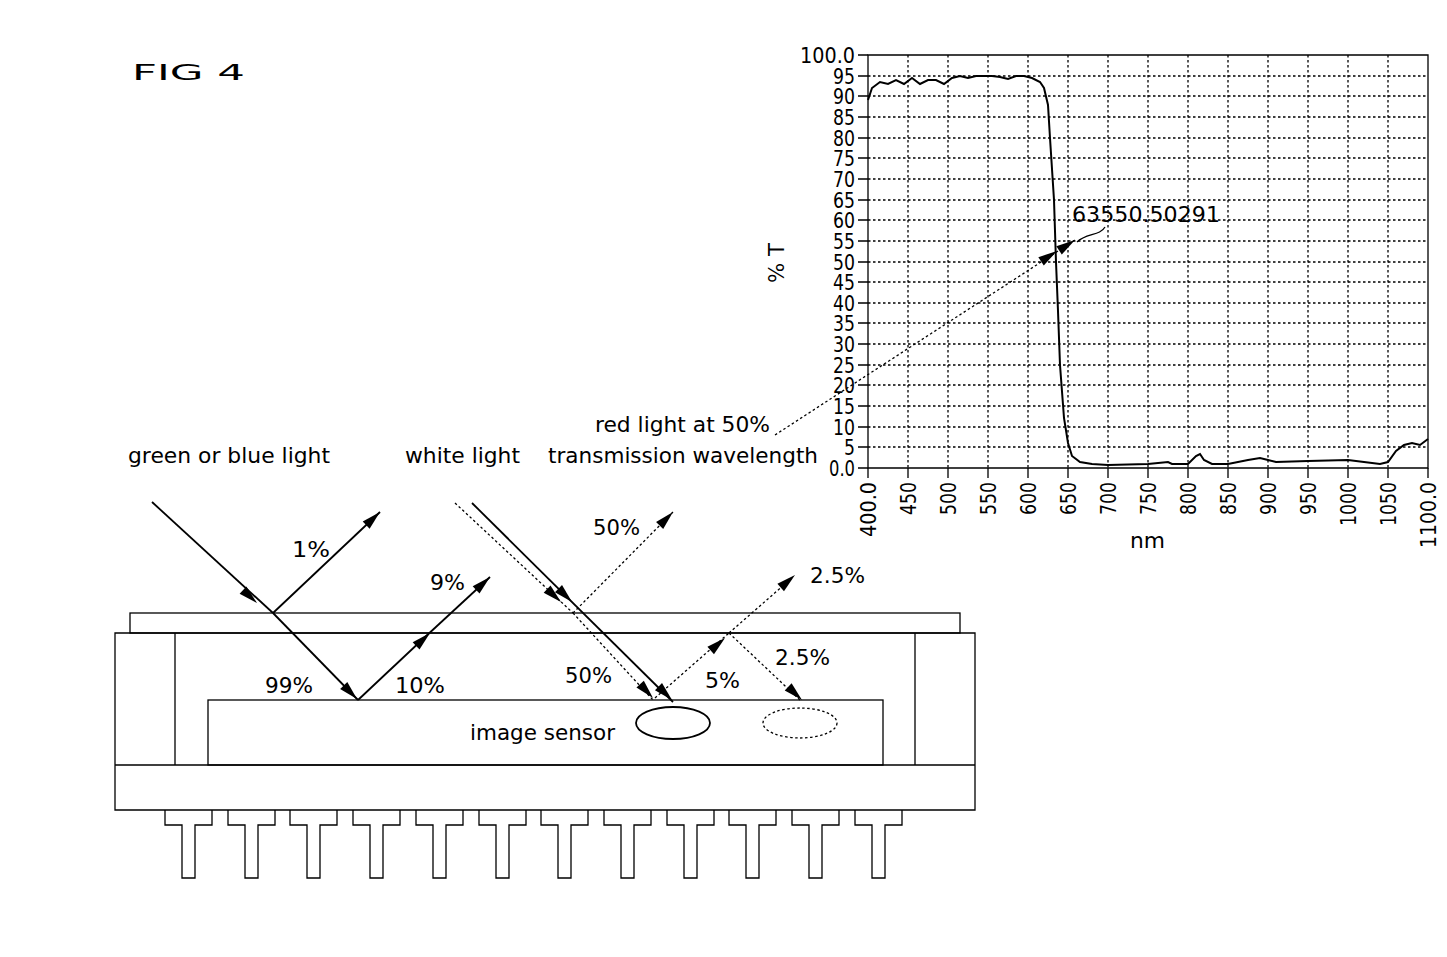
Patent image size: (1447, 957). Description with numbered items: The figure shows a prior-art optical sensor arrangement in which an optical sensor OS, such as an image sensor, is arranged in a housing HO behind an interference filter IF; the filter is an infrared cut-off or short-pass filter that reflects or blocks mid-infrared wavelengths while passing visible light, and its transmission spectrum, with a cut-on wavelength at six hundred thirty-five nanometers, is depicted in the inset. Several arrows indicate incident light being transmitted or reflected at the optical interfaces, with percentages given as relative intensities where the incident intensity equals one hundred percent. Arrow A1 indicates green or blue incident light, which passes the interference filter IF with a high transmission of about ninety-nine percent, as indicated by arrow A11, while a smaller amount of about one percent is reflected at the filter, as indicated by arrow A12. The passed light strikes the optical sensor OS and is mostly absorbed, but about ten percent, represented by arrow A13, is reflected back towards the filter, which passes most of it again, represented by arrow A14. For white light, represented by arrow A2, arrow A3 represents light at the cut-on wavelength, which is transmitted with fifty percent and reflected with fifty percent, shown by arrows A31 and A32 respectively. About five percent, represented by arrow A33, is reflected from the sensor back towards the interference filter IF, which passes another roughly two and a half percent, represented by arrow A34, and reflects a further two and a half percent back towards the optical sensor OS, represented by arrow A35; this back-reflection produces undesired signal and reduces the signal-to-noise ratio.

The arrow indicating green or blue incident light A1 is at (200, 549).
The arrow indicating light passing the filter A11 is at (311, 660).
The arrow indicating light reflected at the interference filter A12 is at (347, 540).
The arrow indicating light reflected from the sensor A13 is at (385, 702).
The arrow indicating light passed again by the filter A14 is at (462, 601).
The arrow indicating white incident light A2 is at (495, 524).
The arrow indicating light at the cut-on wavelength A3 is at (472, 521).
The arrow indicating transmitted cut-on light A31 is at (596, 637).
The arrow indicating reflected cut-on light A32 is at (640, 547).
The arrow indicating cut-on light reflected from the sensor A33 is at (692, 667).
The arrow indicating cut-on light passed by the filter A34 is at (764, 606).
The arrow indicating cut-on light reflected back to the sensor A35 is at (773, 673).
The optical sensor OS is at (515, 708).
The interference filter IF is at (570, 622).
The housing HO is at (577, 755).